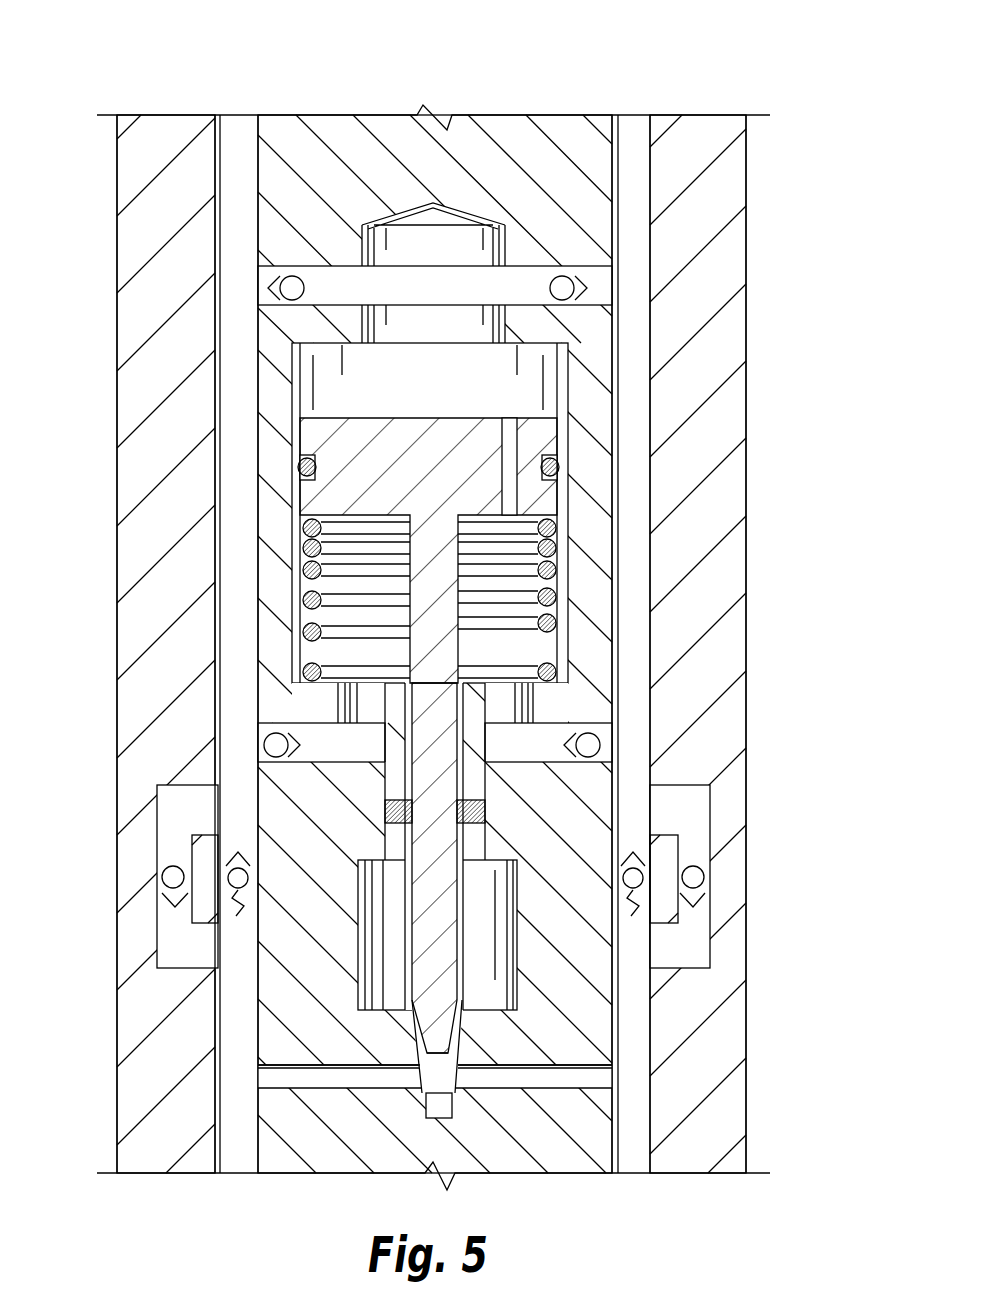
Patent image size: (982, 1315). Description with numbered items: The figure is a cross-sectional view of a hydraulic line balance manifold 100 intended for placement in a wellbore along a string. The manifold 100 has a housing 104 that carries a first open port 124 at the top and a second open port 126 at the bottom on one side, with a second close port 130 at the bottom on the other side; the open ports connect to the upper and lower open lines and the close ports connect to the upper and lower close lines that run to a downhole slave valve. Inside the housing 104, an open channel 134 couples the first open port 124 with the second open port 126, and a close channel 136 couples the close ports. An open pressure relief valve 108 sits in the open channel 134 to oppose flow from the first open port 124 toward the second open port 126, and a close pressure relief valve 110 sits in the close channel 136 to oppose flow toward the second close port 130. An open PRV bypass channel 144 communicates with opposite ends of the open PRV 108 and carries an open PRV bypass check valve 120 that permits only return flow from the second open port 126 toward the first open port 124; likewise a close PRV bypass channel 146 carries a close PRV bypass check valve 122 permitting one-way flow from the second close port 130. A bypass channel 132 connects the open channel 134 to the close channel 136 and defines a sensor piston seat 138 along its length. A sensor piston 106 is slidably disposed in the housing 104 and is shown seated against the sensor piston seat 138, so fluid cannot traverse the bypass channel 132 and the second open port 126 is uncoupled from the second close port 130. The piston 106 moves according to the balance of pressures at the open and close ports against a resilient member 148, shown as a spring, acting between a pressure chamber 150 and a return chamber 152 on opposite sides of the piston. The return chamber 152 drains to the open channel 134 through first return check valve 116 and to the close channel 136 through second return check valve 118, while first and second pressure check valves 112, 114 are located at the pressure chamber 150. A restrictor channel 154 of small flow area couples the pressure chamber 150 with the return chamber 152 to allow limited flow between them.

The hydraulic line balance manifold 100 is at (88, 31).
The housing 104 is at (752, 252).
The sensor piston 106 is at (437, 927).
The open pressure relief valve 108 is at (625, 882).
The close pressure relief valve 110 is at (262, 893).
The first pressure check valve 112 is at (562, 276).
The second pressure check valve 114 is at (291, 276).
The first return check valve 116 is at (590, 760).
The second return check valve 118 is at (279, 760).
The open PRV bypass check valve 120 is at (704, 876).
The close PRV bypass check valve 122 is at (237, 147).
The first open port 124 is at (628, 133).
The second open port 126 is at (636, 1158).
The second close port 130 is at (240, 1160).
The bypass channel 132 is at (523, 1078).
The open channel 134 is at (627, 470).
The close channel 136 is at (232, 470).
The sensor piston seat 138 is at (433, 1068).
The open PRV bypass channel 144 is at (700, 947).
The close PRV bypass channel 146 is at (165, 947).
The resilient member 148 is at (560, 620).
The pressure chamber 150 is at (413, 297).
The return chamber 152 is at (560, 650).
The restrictor channel 154 is at (510, 427).